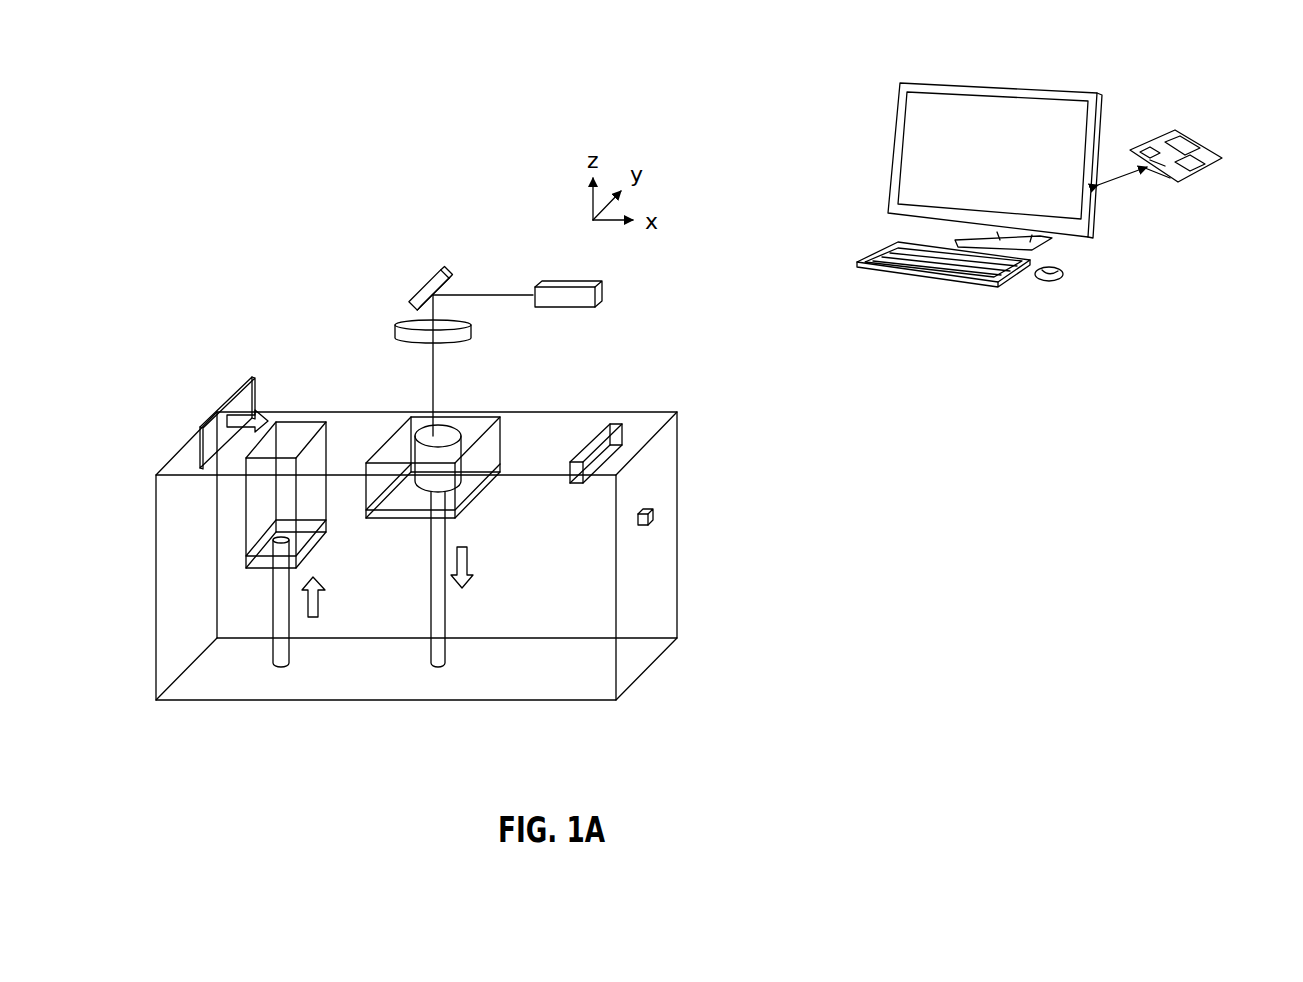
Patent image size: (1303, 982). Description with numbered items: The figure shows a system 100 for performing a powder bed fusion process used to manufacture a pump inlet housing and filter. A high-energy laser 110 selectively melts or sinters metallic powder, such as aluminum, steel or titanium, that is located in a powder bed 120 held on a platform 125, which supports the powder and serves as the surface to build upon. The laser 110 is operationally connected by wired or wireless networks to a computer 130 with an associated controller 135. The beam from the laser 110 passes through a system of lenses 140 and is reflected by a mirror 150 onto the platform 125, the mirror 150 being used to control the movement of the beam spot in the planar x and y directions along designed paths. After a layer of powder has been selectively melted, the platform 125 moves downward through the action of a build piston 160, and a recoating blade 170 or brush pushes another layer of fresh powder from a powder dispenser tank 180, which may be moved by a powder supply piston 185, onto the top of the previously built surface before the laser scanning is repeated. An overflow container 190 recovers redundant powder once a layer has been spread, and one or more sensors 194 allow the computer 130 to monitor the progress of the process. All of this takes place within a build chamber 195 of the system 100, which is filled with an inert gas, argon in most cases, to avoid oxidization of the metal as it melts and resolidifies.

The system 100 is at (884, 701).
The laser 110 is at (602, 293).
The powder bed 120 is at (400, 433).
The platform 125 is at (482, 495).
The computer 130 is at (952, 277).
The controller 135 is at (1175, 183).
The system of lenses 140 is at (395, 333).
The mirror 150 is at (422, 283).
The build piston 160 is at (437, 670).
The recoating blade 170 is at (200, 450).
The powder dispenser tank 180 is at (246, 542).
The powder supply piston 185 is at (279, 670).
The overflow container 190 is at (610, 422).
The sensor 194 is at (655, 515).
The build chamber 195 is at (660, 583).